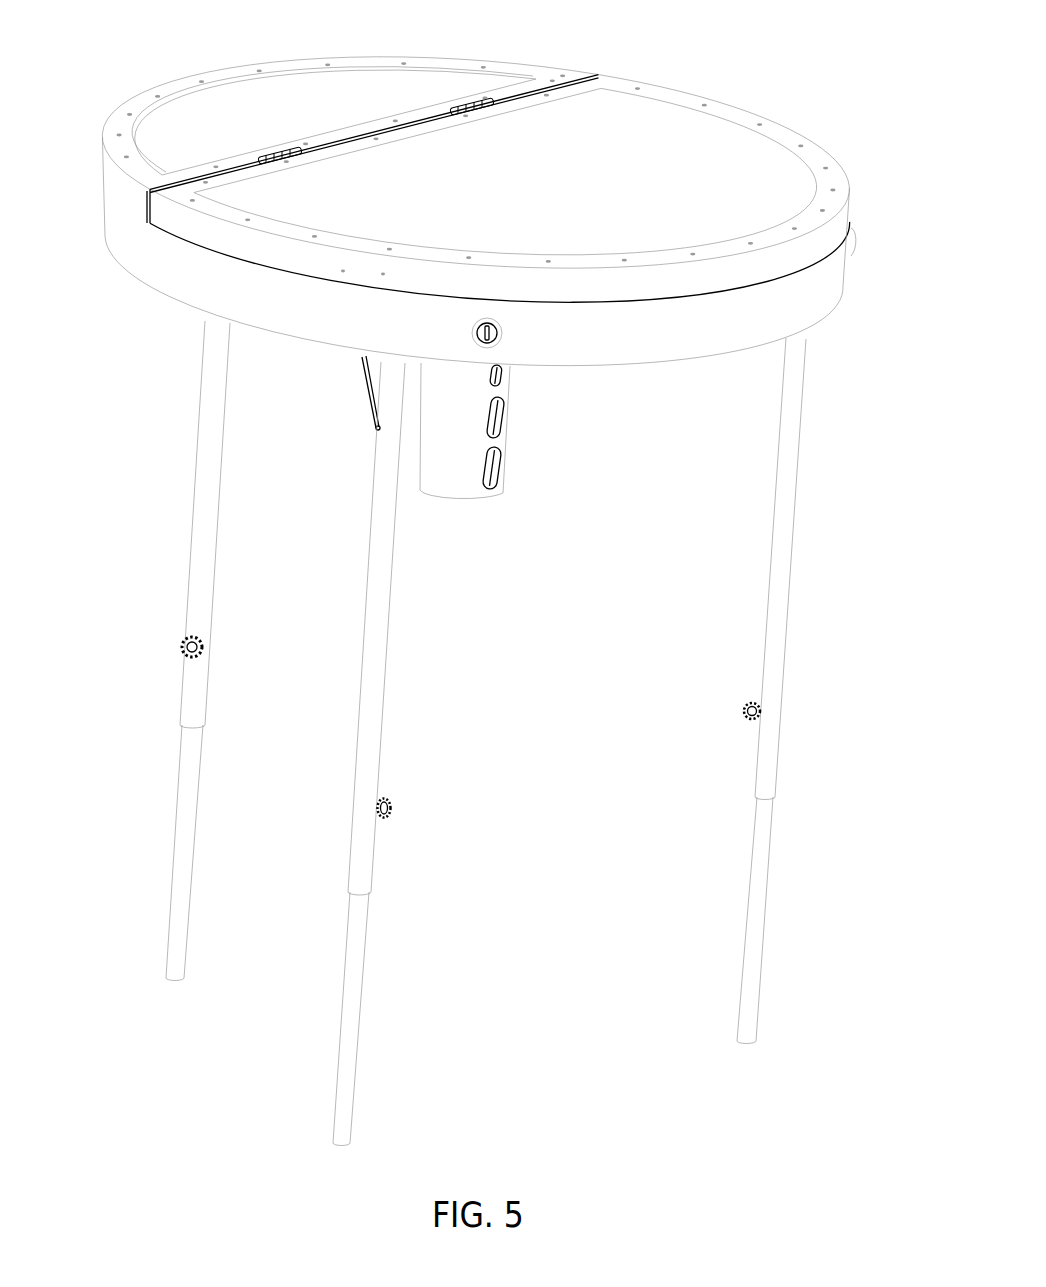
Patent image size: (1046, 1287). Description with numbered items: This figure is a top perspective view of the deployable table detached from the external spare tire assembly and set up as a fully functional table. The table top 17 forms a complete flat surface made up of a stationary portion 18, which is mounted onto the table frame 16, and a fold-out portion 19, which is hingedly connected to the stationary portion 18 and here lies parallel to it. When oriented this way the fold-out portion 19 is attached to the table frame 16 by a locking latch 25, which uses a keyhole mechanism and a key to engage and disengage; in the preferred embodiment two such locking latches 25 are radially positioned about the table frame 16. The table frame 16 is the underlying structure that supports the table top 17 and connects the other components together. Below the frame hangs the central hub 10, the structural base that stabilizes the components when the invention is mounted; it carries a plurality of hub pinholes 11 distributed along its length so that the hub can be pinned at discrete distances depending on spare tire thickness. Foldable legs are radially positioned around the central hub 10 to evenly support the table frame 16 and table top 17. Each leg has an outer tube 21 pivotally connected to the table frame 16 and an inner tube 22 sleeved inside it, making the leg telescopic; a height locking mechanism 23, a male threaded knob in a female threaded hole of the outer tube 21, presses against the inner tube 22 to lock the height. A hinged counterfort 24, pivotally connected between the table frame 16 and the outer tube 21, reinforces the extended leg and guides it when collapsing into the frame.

The central hub 10 is at (443, 490).
The hub pinholes 11 is at (494, 418).
The table frame 16 is at (125, 263).
The table top 17 is at (561, 78).
The stationary portion 18 is at (294, 117).
The fold-out portion 19 is at (594, 197).
The outer tube 21 is at (210, 513).
The inner tube 22 is at (187, 808).
The height locking mechanism 23 is at (182, 648).
The hinged counterfort 24 is at (367, 387).
The locking latch 25 is at (496, 332).